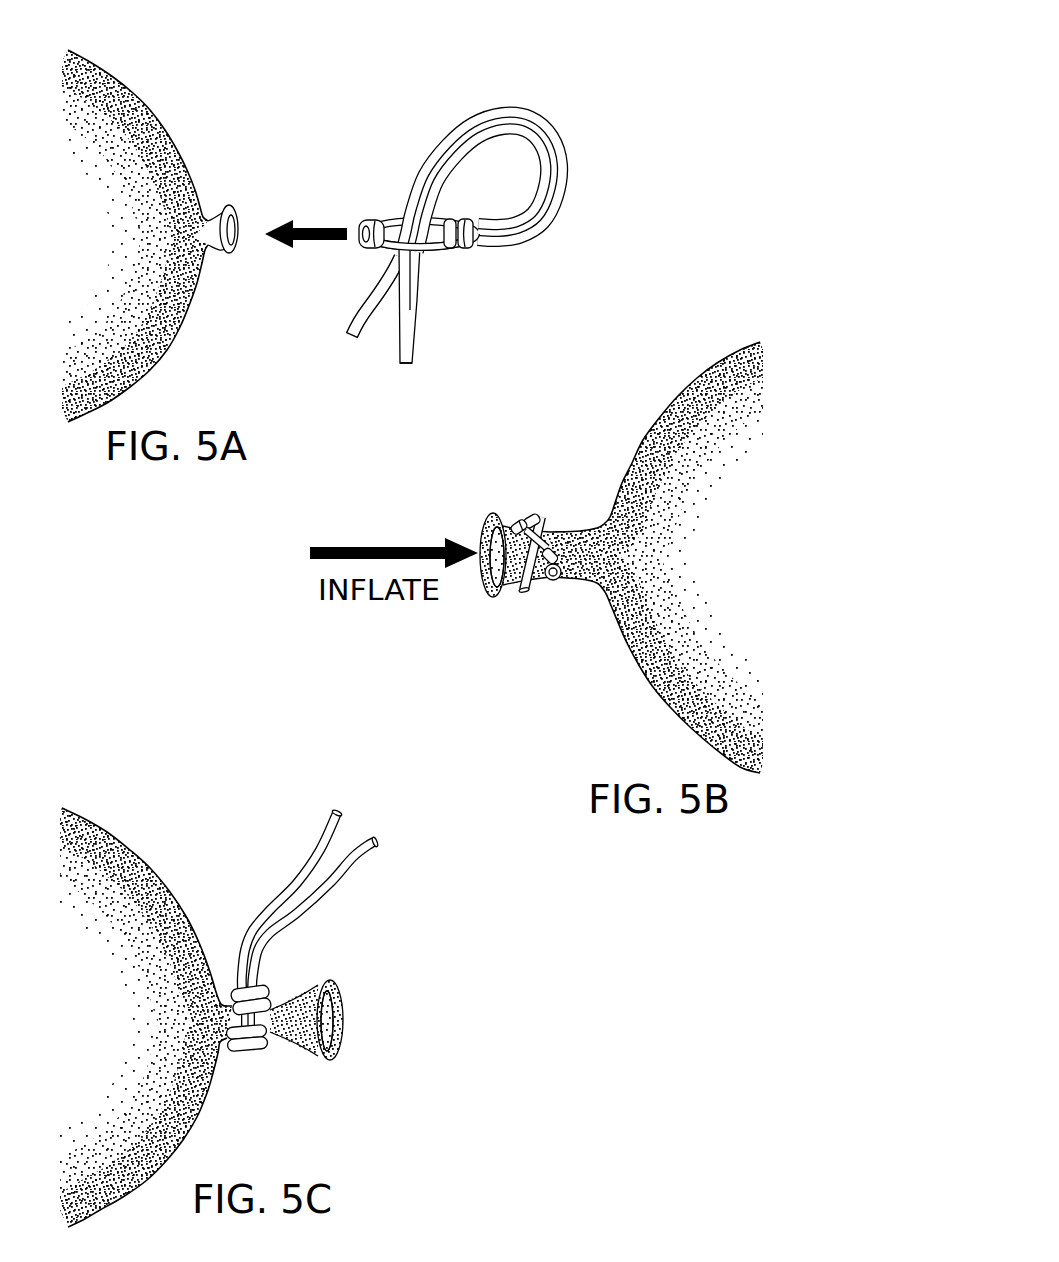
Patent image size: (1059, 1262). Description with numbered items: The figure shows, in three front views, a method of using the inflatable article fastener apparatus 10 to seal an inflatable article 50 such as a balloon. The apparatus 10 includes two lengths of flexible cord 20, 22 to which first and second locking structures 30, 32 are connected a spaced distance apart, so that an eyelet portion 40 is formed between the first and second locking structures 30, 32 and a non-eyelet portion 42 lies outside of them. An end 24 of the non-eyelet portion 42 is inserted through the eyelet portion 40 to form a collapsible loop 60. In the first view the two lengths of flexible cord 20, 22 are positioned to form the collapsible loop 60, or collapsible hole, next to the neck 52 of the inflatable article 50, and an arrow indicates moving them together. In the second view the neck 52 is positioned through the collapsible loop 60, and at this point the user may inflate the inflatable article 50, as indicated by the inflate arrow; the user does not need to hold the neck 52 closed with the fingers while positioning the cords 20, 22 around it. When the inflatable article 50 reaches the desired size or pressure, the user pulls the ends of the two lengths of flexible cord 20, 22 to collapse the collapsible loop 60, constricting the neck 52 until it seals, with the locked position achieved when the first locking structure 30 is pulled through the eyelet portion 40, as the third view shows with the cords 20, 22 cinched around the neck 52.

In FIG. 5A, the inflatable article fastener apparatus 10 is at (464, 217).
In FIG. 5C, the inflatable article fastener apparatus 10 is at (364, 892).
In FIG. 5A, the length of flexible cord 20 is at (435, 336).
In FIG. 5B, the length of flexible cord 20 is at (533, 590).
In FIG. 5C, the length of flexible cord 20 is at (316, 861).
In FIG. 5A, the length of flexible cord 22 is at (519, 214).
In FIG. 5B, the length of flexible cord 22 is at (523, 589).
In FIG. 5C, the length of flexible cord 22 is at (360, 862).
In FIG. 5A, the end 24 is at (405, 366).
In FIG. 5C, the end 24 is at (375, 838).
In FIG. 5A, the first locking structure 30 is at (450, 250).
In FIG. 5B, the first locking structure 30 is at (519, 521).
In FIG. 5A, the second locking structure 32 is at (377, 219).
In FIG. 5B, the second locking structure 32 is at (555, 578).
In FIG. 5A, the eyelet portion 40 is at (393, 256).
In FIG. 5B, the eyelet portion 40 is at (545, 516).
In FIG. 5A, the non-eyelet portion 42 is at (391, 224).
In FIG. 5A, the inflatable article 50 is at (113, 236).
In FIG. 5B, the inflatable article 50 is at (676, 561).
In FIG. 5C, the inflatable article 50 is at (80, 1023).
In FIG. 5A, the neck 52 is at (219, 209).
In FIG. 5B, the neck 52 is at (508, 584).
In FIG. 5C, the neck 52 is at (283, 1034).
In FIG. 5A, the collapsible loop 60 is at (498, 178).
In FIG. 5B, the collapsible loop 60 is at (550, 550).